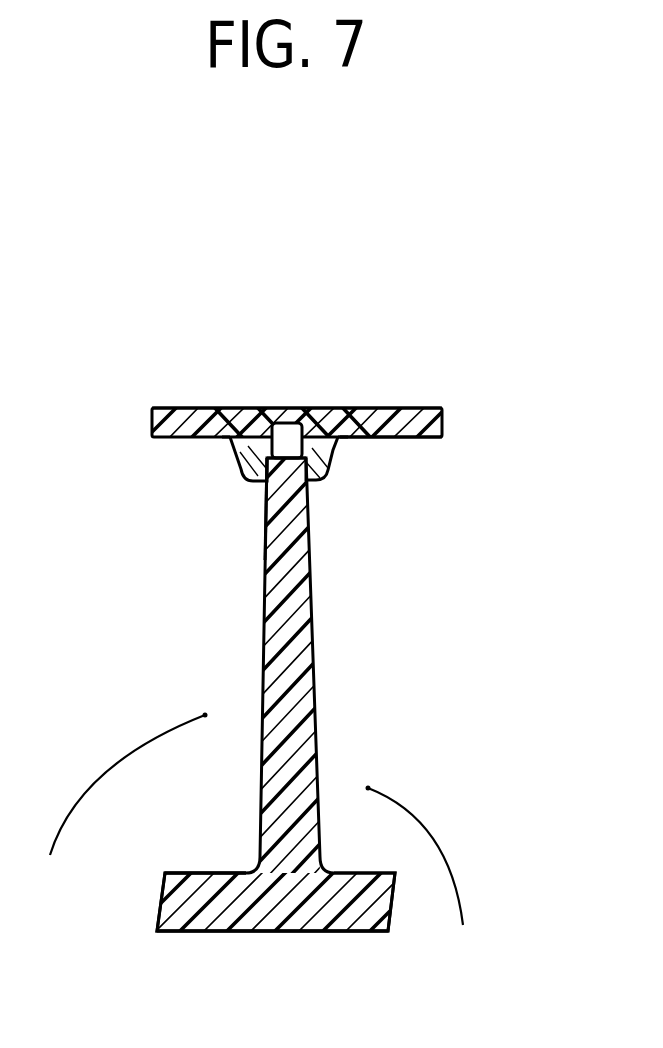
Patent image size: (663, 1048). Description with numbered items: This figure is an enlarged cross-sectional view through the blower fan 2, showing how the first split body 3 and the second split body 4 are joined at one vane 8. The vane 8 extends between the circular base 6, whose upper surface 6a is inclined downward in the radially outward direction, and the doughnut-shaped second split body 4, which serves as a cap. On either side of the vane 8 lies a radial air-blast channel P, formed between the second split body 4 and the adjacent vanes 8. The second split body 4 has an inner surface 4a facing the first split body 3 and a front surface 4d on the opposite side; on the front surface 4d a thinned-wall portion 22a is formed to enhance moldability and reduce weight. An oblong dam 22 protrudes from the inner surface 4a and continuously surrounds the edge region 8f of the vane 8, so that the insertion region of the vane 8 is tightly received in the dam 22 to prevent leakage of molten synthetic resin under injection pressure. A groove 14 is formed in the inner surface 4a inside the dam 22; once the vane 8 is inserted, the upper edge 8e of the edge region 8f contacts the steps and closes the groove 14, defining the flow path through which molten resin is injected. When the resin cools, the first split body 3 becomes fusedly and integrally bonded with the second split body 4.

The blower fan 2 is at (283, 367).
The first split body 3 is at (298, 932).
The second split body 4 is at (382, 405).
The inner surface 4a is at (403, 438).
The front surface 4d is at (177, 407).
The circular base 6 is at (202, 932).
The upper surface 6a is at (198, 873).
The vane 8 is at (300, 702).
The upper edge 8e is at (270, 449).
The edge region 8f is at (267, 506).
The groove 14 is at (280, 440).
The dam 22 is at (315, 477).
The thinned-wall portion 22a is at (232, 407).
The air-blast channel P is at (255, 846).